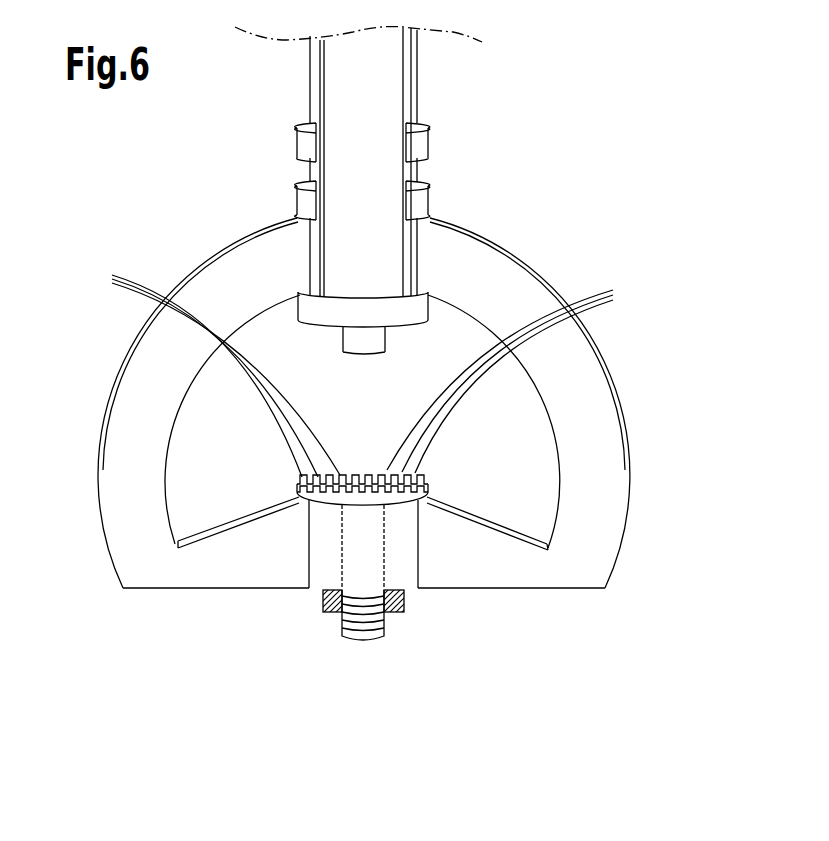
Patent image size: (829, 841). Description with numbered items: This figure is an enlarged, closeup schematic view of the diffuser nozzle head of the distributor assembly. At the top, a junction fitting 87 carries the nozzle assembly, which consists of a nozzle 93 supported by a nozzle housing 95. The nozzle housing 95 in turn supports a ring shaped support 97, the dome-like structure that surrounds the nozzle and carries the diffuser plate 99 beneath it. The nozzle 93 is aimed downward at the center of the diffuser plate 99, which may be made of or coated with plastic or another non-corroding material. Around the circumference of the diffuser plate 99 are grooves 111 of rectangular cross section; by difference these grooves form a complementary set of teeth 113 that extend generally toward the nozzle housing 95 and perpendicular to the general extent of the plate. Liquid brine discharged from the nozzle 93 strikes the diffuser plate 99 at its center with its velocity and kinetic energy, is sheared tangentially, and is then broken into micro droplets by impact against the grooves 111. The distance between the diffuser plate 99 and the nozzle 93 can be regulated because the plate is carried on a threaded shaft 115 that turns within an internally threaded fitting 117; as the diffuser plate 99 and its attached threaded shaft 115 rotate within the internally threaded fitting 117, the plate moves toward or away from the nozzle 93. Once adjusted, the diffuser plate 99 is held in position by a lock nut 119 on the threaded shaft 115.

The junction fitting 87 is at (312, 83).
The nozzle housing 95 is at (373, 238).
The nozzle 93 is at (368, 338).
The ring shaped support 97 is at (595, 468).
The teeth 113 is at (202, 370).
The grooves 111 is at (524, 374).
The diffuser plate 99 is at (297, 488).
The threaded shaft 115 is at (352, 547).
The internally threaded fitting 117 is at (407, 553).
The lock nut 119 is at (390, 608).